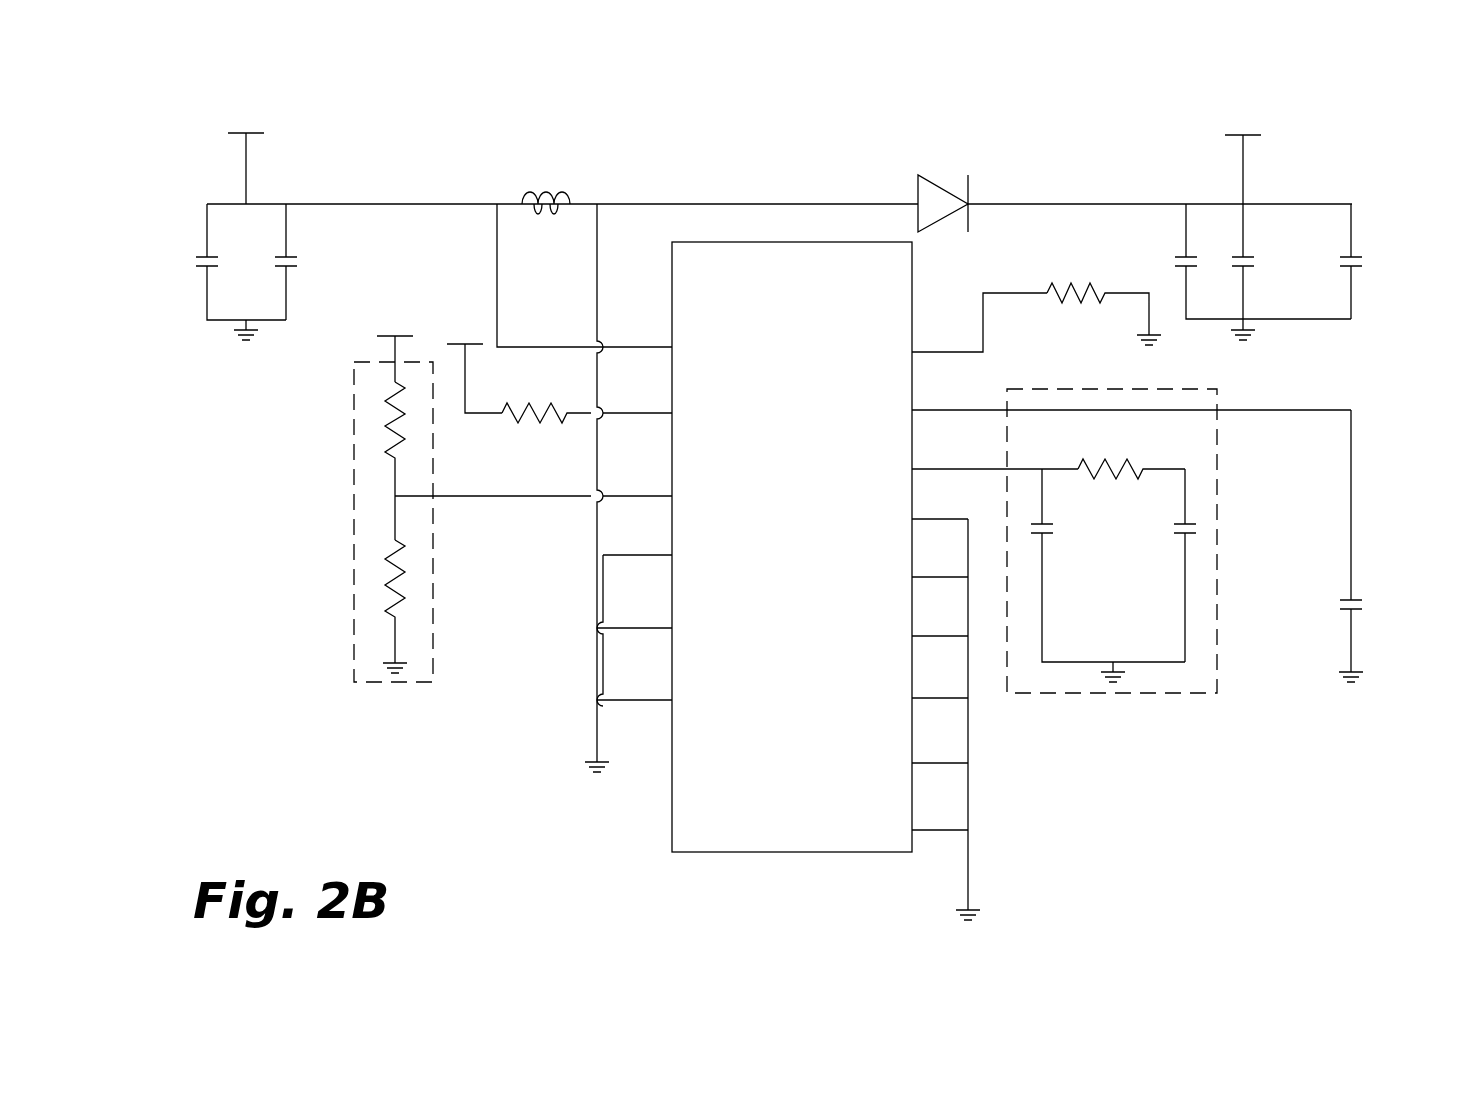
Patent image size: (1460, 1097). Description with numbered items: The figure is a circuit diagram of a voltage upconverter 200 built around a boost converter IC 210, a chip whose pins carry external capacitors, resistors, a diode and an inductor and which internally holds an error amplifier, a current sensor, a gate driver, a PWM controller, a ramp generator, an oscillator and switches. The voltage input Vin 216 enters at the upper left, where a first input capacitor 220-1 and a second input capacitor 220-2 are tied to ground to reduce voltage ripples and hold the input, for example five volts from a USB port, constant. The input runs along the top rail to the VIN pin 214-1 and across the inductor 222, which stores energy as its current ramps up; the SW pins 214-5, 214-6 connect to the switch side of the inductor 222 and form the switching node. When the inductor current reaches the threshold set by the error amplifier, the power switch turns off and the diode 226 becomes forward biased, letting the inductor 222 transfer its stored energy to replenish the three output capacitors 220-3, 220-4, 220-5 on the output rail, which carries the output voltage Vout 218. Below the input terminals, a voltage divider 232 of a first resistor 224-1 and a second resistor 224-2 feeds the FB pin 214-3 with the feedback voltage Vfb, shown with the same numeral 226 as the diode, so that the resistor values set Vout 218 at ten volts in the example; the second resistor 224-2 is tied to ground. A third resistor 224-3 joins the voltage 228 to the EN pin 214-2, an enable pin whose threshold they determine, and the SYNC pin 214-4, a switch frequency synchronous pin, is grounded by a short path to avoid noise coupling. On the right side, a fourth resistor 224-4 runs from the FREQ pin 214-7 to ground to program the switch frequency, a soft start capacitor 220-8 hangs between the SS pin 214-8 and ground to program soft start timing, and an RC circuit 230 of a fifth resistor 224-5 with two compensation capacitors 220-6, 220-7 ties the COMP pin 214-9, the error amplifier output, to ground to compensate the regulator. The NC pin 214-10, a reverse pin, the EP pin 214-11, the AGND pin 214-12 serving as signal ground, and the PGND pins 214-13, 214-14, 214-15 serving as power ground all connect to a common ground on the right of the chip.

The voltage upconverter 200 is at (213, 170).
The voltage input Vin 216 is at (245, 120).
The output voltage Vout 218 is at (1237, 122).
The capacitor C1 220-1 is at (194, 253).
The capacitor C2 220-2 is at (292, 252).
The capacitor C3 220-3 is at (1170, 246).
The capacitor C4 220-4 is at (1251, 246).
The capacitor C5 220-5 is at (1360, 248).
The capacitor C6 220-6 is at (1056, 518).
The capacitor C7 220-7 is at (1200, 516).
The capacitor C8 220-8 is at (1336, 594).
The inductor L1 222 is at (540, 180).
The diode D1 226 is at (924, 155).
The voltage V3 228 is at (470, 328).
The resistor R1 224-1 is at (377, 428).
The resistor R2 224-2 is at (377, 578).
The resistor R3 224-3 is at (546, 434).
The resistor R4 224-4 is at (1068, 280).
The resistor R5 224-5 is at (1119, 458).
The voltage divider 232 is at (399, 705).
The RC circuit 230 is at (1115, 714).
The boost converter IC 210 is at (775, 309).
The VIN pin 214-1 is at (689, 374).
The EN pin 214-2 is at (689, 442).
The FB pin 214-3 is at (689, 519).
The SYNC pin 214-4 is at (689, 582).
The SW pin 214-5 is at (689, 652).
The SW pin 214-6 is at (689, 724).
The FREQ pin 214-7 is at (842, 374).
The SS pin 214-8 is at (842, 436).
The COMP pin 214-9 is at (842, 499).
The NC pin 214-10 is at (836, 554).
The EP pin 214-11 is at (836, 609).
The AGND pin 214-12 is at (836, 666).
The PGND pin 214-13 is at (836, 727).
The PGND pin 214-14 is at (836, 789).
The PGND pin 214-15 is at (836, 844).